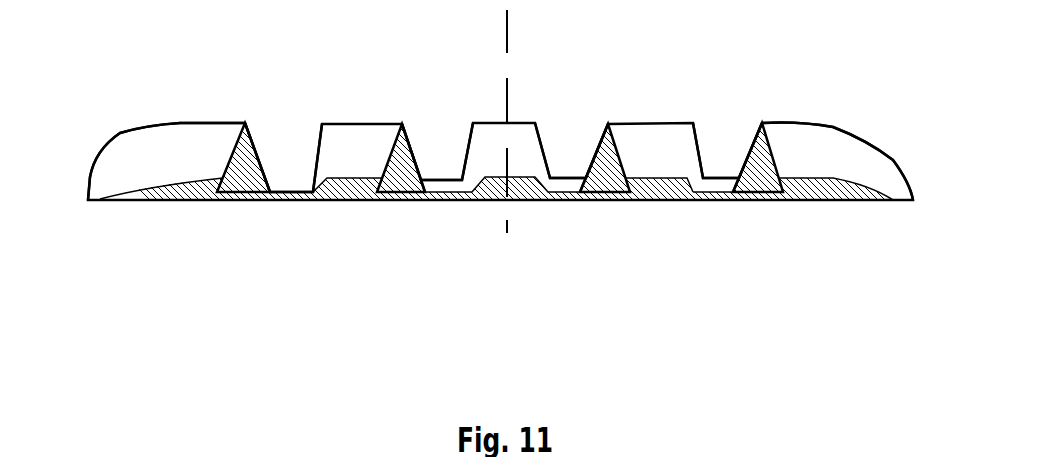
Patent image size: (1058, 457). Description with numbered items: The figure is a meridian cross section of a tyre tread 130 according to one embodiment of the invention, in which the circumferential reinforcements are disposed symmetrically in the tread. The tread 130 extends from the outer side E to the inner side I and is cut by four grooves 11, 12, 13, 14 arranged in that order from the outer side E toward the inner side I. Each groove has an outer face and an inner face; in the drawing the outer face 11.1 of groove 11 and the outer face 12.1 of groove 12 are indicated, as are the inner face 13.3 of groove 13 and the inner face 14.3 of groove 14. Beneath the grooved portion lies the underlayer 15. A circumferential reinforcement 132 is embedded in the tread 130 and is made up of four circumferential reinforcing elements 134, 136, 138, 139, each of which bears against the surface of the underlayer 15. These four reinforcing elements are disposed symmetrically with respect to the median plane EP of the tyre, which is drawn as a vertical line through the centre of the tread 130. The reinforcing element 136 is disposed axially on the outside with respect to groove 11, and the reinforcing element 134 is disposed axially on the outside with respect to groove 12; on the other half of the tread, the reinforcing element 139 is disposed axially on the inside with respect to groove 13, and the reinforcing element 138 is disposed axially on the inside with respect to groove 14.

The tread 130 is at (305, 55).
The outer side E is at (130, 112).
The inner side I is at (884, 110).
The median plane EP is at (487, 121).
The groove 11 is at (294, 148).
The outer face 11.1 is at (258, 152).
The groove 12 is at (453, 140).
The outer face 12.1 is at (413, 150).
The groove 13 is at (574, 135).
The inner face 13.3 is at (598, 150).
The groove 14 is at (726, 142).
The inner face 14.3 is at (752, 153).
The circumferential reinforcing element 136 is at (243, 185).
The circumferential reinforcing element 134 is at (400, 180).
The circumferential reinforcing element 139 is at (610, 180).
The circumferential reinforcing element 138 is at (757, 178).
The circumferential reinforcement 132 is at (360, 258).
The underlayer 15 is at (663, 180).